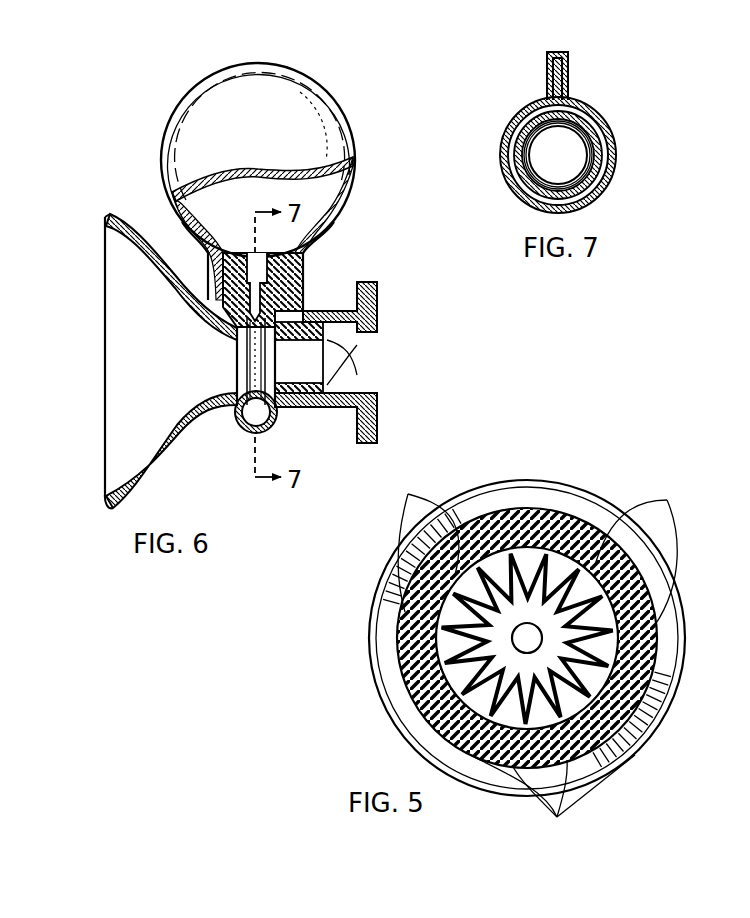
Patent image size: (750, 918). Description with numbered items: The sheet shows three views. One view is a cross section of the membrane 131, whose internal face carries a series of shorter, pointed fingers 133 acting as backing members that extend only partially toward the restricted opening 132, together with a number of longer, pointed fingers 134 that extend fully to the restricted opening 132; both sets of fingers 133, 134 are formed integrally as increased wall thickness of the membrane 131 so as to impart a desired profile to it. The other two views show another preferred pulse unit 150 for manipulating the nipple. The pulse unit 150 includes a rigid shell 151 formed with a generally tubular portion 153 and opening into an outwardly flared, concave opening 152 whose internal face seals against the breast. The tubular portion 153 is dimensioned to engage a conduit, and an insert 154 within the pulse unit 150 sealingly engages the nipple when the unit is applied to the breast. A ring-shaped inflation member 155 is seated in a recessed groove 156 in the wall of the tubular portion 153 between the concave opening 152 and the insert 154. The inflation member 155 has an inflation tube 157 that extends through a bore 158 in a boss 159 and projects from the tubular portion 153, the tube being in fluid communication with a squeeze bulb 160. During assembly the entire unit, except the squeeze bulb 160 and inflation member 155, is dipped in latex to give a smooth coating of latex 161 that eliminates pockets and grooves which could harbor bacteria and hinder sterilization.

In FIG. 5, the membrane 131 is at (400, 613).
In FIG. 5, the restricted opening 132 is at (430, 660).
In FIG. 5, the shorter pointed fingers 133 is at (408, 494).
In FIG. 5, the longer pointed fingers 134 is at (520, 520).
In FIG. 6, the pulse unit 150 is at (377, 163).
In FIG. 6, the rigid shell 151 is at (335, 300).
In FIG. 6, the concave opening 152 is at (148, 236).
In FIG. 6, the tubular portion 153 is at (335, 315).
In FIG. 6, the insert 154 is at (350, 345).
In FIG. 6, the inflation member 155 is at (237, 395).
In FIG. 7, the inflation member 155 is at (612, 142).
In FIG. 6, the recessed groove 156 is at (240, 418).
In FIG. 7, the recessed groove 156 is at (605, 158).
In FIG. 6, the inflation tube 157 is at (308, 266).
In FIG. 7, the inflation tube 157 is at (570, 66).
In FIG. 6, the bore 158 is at (300, 300).
In FIG. 7, the bore 158 is at (560, 82).
In FIG. 6, the boss 159 is at (246, 254).
In FIG. 6, the squeeze bulb 160 is at (300, 105).
In FIG. 6, the latex coating 161 is at (140, 478).